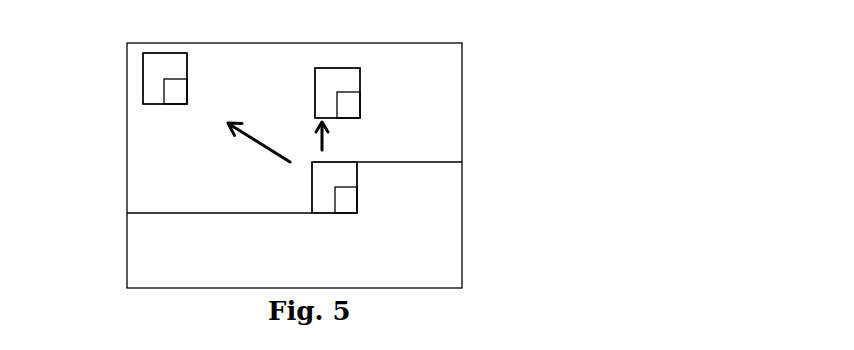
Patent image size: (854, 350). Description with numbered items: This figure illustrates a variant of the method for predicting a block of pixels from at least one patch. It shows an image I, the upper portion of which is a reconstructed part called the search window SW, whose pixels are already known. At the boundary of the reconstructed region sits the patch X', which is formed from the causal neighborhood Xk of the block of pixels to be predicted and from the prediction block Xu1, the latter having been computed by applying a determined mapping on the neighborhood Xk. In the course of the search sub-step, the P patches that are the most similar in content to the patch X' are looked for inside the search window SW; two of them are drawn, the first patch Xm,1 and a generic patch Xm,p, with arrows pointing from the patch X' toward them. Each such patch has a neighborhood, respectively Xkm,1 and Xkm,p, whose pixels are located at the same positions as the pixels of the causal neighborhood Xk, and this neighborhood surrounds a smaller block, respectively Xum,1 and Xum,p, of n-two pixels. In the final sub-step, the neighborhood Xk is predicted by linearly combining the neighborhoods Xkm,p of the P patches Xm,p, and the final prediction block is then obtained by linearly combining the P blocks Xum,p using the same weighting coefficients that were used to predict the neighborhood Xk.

The image I is at (127, 123).
The search window SW is at (433, 61).
The other patch Xm,p is at (173, 53).
The neighborhood of the other patch Xkm,p is at (153, 85).
The block of the other patch Xum,p is at (175, 97).
The first other patch Xm,1 is at (341, 68).
The neighborhood of the first other patch Xkm,1 is at (328, 85).
The block of the first other patch Xum,1 is at (350, 103).
The patch X' is at (354, 167).
The causal neighborhood Xk is at (318, 197).
The prediction block Xu1 is at (347, 200).